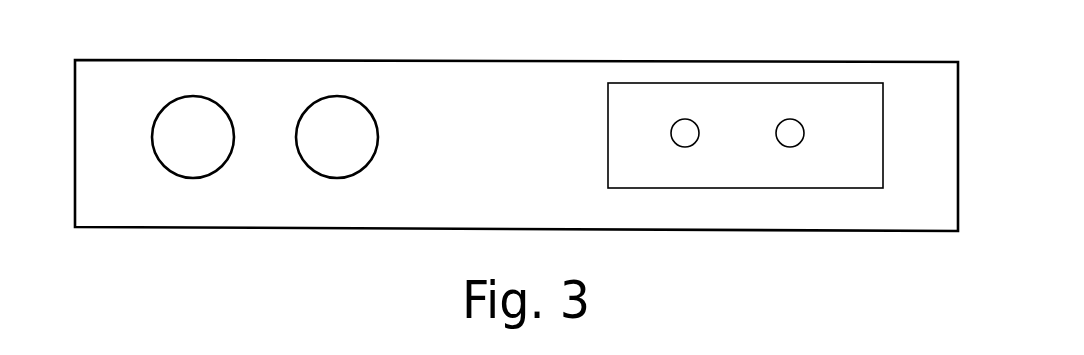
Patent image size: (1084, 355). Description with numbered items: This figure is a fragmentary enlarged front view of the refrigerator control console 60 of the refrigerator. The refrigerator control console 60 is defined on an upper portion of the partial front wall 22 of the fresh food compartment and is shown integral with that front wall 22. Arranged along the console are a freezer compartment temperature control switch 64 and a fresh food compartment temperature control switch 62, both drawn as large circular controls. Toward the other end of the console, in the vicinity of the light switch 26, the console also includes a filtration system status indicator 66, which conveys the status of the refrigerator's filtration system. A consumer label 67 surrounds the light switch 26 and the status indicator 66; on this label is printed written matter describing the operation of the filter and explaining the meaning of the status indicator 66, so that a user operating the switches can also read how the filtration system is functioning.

The refrigerator control console 60 is at (267, 107).
The freezer compartment temperature control switch 64 is at (208, 150).
The fresh food compartment temperature control switch 62 is at (352, 150).
The partial front wall 22 is at (477, 146).
The consumer label 67 is at (762, 157).
The filtration system status indicator 66 is at (670, 139).
The light switch 26 is at (805, 139).